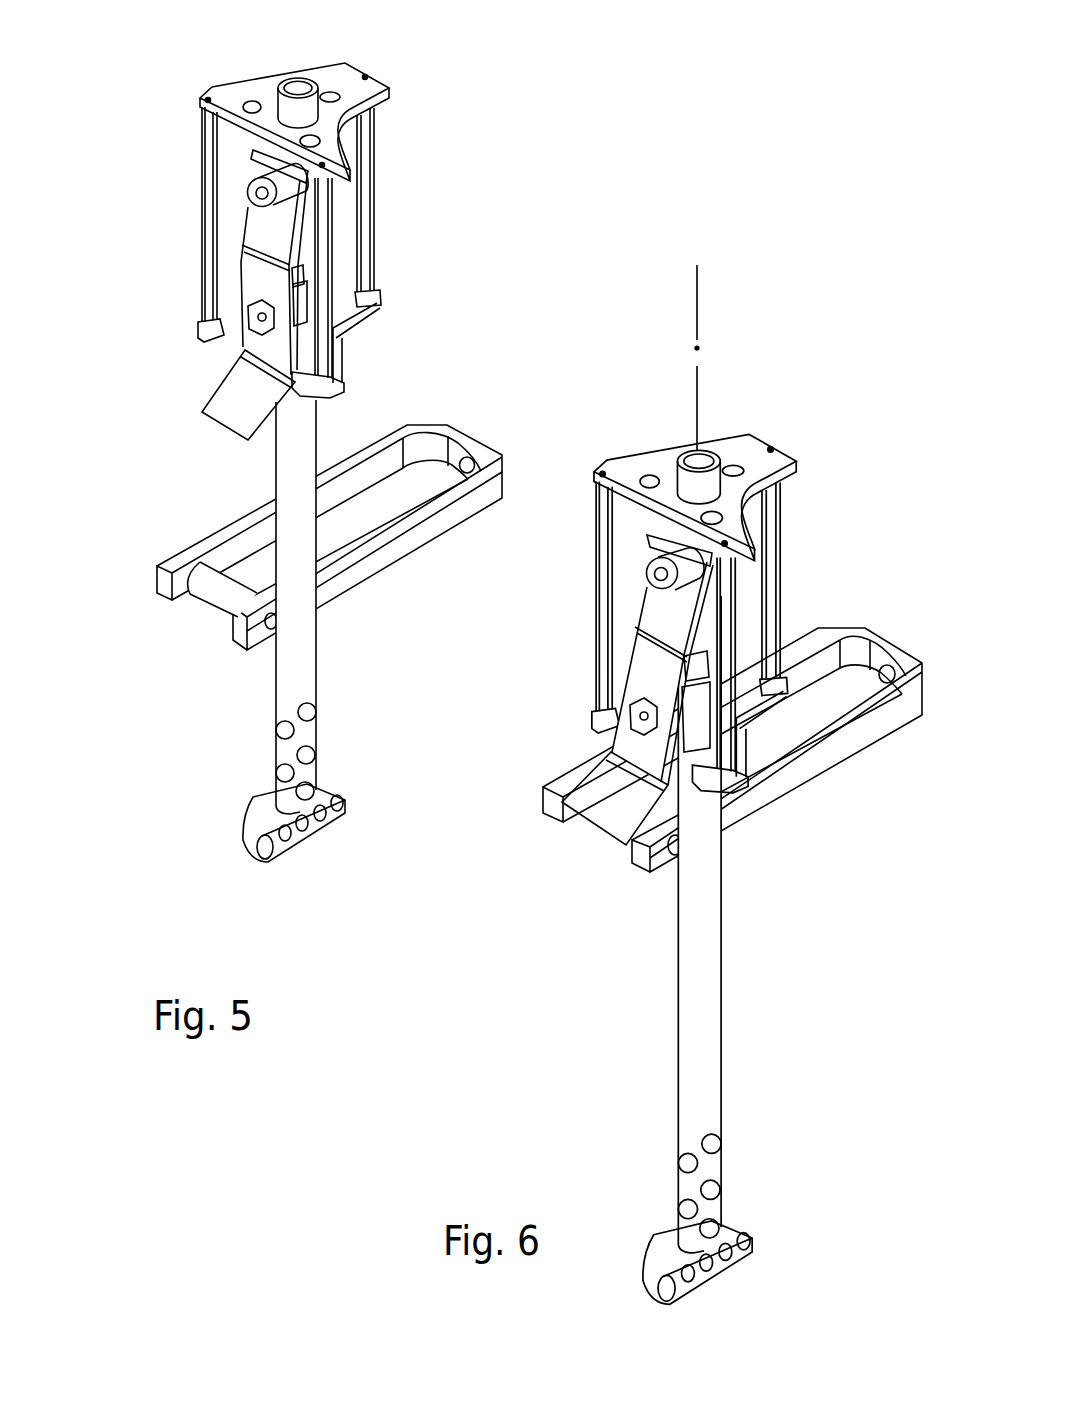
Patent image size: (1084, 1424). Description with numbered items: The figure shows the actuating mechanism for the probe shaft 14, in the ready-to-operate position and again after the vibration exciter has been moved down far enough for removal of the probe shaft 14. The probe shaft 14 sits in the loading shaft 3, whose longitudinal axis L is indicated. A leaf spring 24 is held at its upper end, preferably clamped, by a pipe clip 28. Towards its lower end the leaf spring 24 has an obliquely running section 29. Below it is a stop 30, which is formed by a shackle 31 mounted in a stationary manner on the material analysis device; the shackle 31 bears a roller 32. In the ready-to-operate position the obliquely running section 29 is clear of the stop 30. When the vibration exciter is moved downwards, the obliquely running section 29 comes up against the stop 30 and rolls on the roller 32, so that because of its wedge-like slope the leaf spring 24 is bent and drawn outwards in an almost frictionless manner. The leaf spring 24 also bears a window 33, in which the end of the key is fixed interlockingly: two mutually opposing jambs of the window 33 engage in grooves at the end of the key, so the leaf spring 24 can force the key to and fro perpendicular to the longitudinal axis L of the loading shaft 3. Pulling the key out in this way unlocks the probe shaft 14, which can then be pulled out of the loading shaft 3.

In FIG. 5, the loading shaft 3 is at (297, 78).
In FIG. 6, the loading shaft 3 is at (690, 436).
In FIG. 5, the probe shaft 14 is at (307, 670).
In FIG. 6, the probe shaft 14 is at (713, 1043).
In FIG. 5, the leaf spring 24 is at (245, 287).
In FIG. 6, the leaf spring 24 is at (634, 677).
In FIG. 5, the pipe clip 28 is at (305, 200).
In FIG. 6, the pipe clip 28 is at (660, 530).
In FIG. 5, the obliquely running section 29 is at (232, 403).
In FIG. 6, the obliquely running section 29 is at (603, 830).
In FIG. 5, the stop 30 is at (174, 648).
In FIG. 6, the stop 30 is at (556, 884).
In FIG. 5, the shackle 31 is at (488, 457).
In FIG. 6, the shackle 31 is at (903, 661).
In FIG. 5, the roller 32 is at (216, 587).
In FIG. 5, the window 33 is at (250, 329).
In FIG. 6, the window 33 is at (622, 705).
In FIG. 6, the longitudinal axis L is at (698, 292).